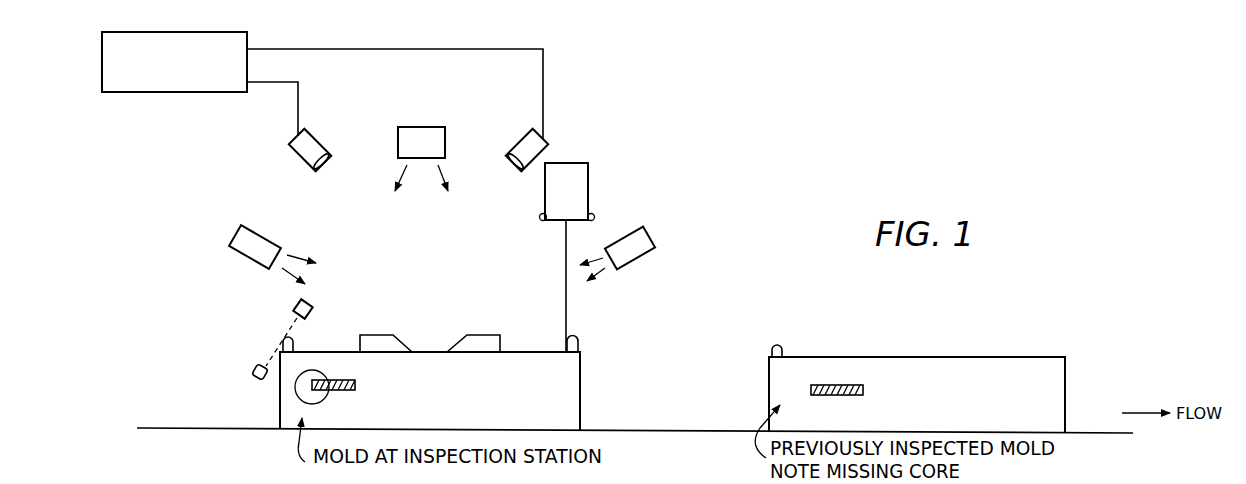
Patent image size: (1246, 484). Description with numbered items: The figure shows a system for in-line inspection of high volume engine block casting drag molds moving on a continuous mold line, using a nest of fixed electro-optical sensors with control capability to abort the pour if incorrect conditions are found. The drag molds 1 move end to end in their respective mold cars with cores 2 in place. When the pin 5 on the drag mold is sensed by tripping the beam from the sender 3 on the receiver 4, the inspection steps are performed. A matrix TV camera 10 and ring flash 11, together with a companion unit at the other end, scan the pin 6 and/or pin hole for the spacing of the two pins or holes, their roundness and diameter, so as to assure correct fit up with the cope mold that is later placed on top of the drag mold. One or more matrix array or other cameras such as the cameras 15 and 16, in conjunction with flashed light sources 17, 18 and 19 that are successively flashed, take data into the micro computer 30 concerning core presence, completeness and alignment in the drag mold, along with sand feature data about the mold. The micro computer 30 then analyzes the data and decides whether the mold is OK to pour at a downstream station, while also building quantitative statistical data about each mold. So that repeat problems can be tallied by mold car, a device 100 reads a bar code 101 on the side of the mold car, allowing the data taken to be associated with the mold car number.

The drag mold 1 is at (583, 386).
The core 2 is at (468, 333).
The sender 3 is at (253, 371).
The receiver 4 is at (313, 309).
The pin 5 is at (277, 337).
The pin 6 is at (580, 346).
The matrix TV camera 10 is at (578, 196).
The ring flash 11 is at (594, 212).
The camera 15 is at (310, 142).
The camera 16 is at (525, 142).
The flashed light source 17 is at (432, 155).
The flashed light source 18 is at (640, 251).
The flashed light source 19 is at (264, 242).
The micro computer 30 is at (160, 72).
The bar code reading device 100 is at (322, 400).
The bar code 101 is at (357, 386).